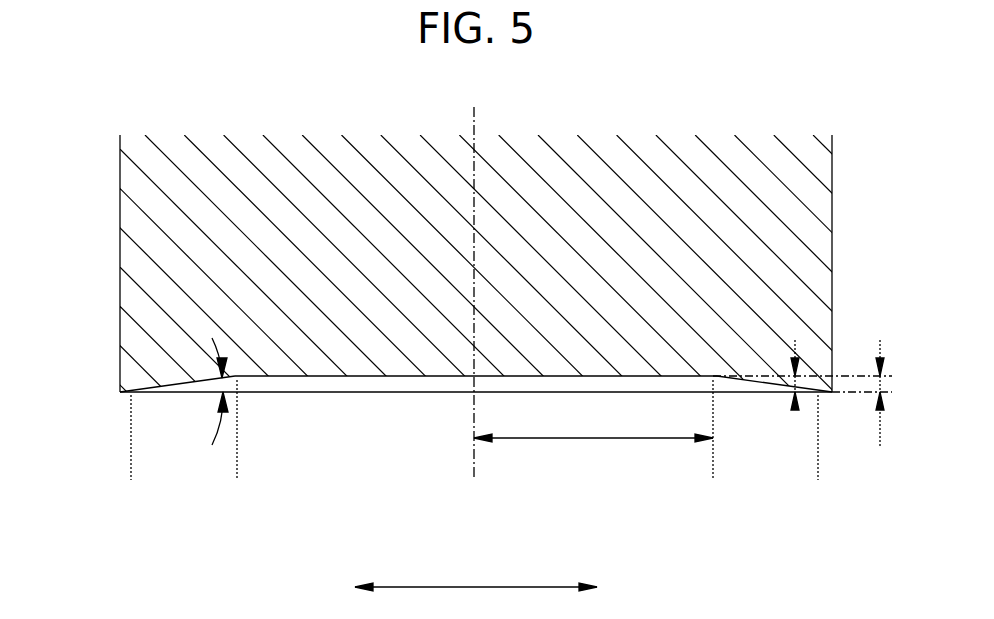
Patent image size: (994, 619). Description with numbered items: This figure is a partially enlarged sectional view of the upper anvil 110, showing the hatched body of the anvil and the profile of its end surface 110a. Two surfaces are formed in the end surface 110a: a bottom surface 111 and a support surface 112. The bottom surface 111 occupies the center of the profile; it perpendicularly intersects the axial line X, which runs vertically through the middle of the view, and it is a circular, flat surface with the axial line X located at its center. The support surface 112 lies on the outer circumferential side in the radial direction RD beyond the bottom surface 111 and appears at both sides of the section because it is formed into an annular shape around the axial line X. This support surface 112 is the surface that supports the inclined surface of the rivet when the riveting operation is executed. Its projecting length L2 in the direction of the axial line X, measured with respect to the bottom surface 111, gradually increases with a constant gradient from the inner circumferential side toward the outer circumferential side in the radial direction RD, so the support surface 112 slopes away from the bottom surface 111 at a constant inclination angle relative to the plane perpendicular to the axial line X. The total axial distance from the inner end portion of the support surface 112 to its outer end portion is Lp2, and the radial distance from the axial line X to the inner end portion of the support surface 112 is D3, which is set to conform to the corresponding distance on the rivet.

The upper anvil 110 is at (129, 255).
The end surface 110a is at (320, 377).
The bottom surface 111 is at (713, 480).
The support surface 112 is at (237, 480).
The axial line X is at (474, 464).
The distance D3 is at (593, 420).
The projecting length L2 is at (779, 393).
The distance Lp2 is at (822, 393).
The radial direction RD is at (476, 569).